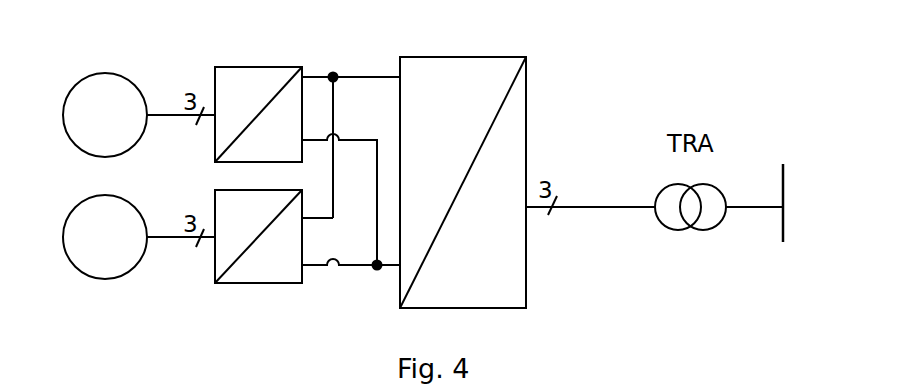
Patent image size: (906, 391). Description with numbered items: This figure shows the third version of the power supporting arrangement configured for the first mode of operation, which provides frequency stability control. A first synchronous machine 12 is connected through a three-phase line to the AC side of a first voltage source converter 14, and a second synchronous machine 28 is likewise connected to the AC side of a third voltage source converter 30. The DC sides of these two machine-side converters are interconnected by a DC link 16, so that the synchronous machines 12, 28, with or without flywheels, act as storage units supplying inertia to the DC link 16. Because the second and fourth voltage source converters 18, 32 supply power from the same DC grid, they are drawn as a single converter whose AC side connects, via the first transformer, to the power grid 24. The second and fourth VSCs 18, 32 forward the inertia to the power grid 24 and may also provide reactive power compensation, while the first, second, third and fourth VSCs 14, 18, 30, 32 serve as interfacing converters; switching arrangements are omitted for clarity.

The first synchronous machine 12 is at (87, 115).
The first voltage source converter 14 is at (258, 86).
The DC link 16 is at (351, 171).
The second voltage source converter 18 is at (463, 182).
The power grid 24 is at (782, 174).
The second synchronous machine 28 is at (86, 237).
The third voltage source converter 30 is at (258, 269).
The fourth voltage source converter 32 is at (463, 182).